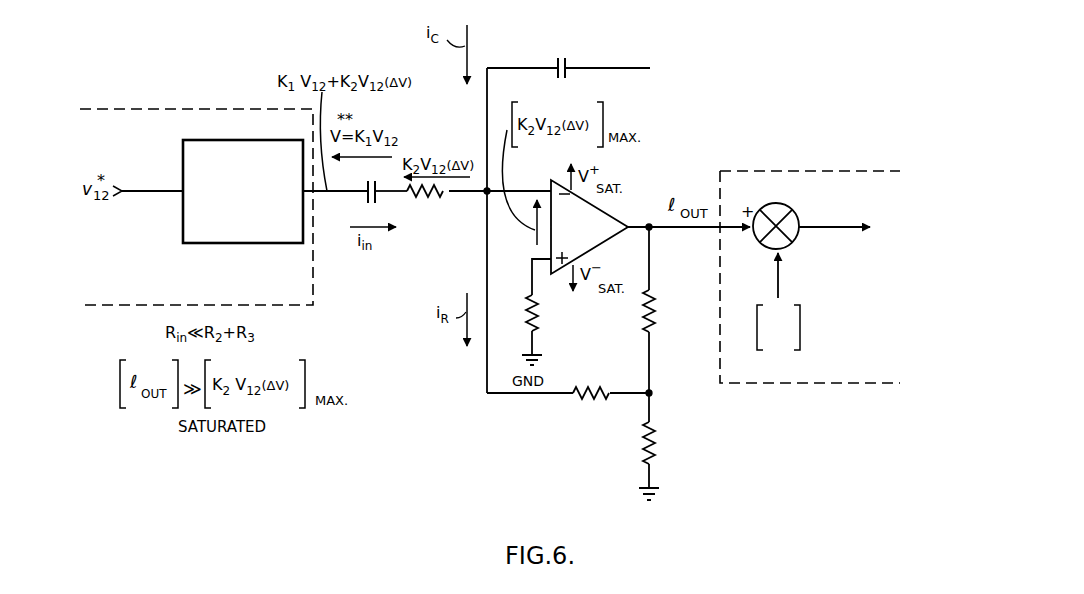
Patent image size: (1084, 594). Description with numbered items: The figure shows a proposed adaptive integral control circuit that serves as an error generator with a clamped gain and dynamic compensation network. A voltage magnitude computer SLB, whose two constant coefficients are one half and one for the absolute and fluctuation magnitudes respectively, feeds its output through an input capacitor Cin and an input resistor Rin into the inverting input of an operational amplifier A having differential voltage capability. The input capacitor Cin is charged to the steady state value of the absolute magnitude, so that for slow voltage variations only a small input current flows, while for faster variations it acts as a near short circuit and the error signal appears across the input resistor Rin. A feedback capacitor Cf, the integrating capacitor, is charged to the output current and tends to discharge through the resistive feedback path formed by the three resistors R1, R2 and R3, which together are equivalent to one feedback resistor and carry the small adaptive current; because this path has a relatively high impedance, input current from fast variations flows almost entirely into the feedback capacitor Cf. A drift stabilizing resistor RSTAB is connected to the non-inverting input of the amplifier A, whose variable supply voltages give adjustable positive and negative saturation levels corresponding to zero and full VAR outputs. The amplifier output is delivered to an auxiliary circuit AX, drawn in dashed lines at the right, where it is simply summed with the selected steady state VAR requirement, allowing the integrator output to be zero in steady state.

The voltage magnitude computer SLB is at (276, 248).
The auxiliary circuit AX is at (805, 388).
The input capacitor Cin is at (370, 204).
The input resistor Rin is at (430, 200).
The feedback capacitor Cf is at (564, 58).
The operational amplifier A is at (589, 227).
The drift stabilizing resistor RSTAB is at (538, 318).
The feedback resistor R1 is at (657, 300).
The feedback resistor R2 is at (658, 440).
The feedback resistor R3 is at (590, 383).